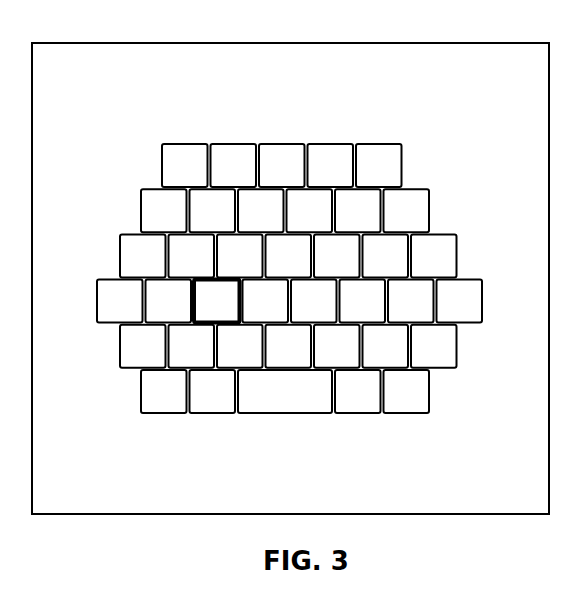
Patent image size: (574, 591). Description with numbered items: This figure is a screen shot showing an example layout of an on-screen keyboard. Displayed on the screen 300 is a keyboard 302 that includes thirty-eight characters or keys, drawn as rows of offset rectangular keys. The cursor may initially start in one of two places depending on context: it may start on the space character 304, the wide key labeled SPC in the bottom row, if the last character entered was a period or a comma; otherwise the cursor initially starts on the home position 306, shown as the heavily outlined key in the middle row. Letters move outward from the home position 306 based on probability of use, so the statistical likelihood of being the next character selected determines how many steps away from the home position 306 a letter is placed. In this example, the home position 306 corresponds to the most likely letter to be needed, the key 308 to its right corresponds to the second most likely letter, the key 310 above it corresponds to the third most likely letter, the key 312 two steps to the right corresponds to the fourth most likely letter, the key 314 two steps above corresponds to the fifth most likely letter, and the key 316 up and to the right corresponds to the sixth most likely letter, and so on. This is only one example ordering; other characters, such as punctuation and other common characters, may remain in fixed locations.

The screen 300 is at (100, 42).
The keyboard 302 is at (497, 84).
The space character 304 is at (290, 402).
The home position 306 is at (207, 298).
The key 308 is at (260, 295).
The key 310 is at (247, 255).
The key 312 is at (323, 298).
The key 314 is at (254, 207).
The key 316 is at (291, 257).